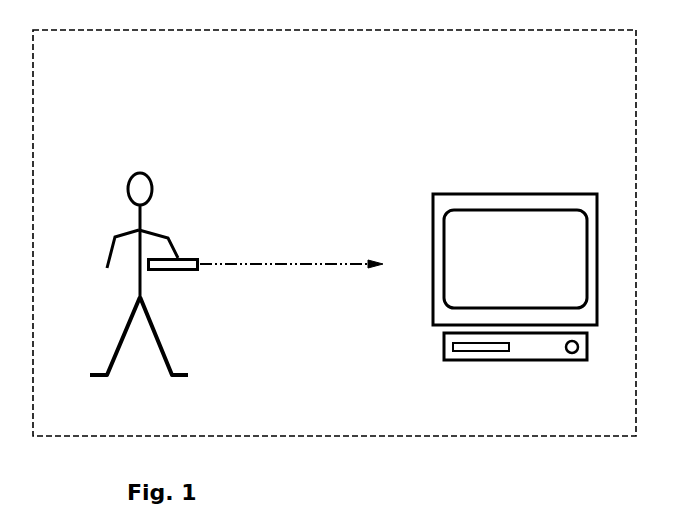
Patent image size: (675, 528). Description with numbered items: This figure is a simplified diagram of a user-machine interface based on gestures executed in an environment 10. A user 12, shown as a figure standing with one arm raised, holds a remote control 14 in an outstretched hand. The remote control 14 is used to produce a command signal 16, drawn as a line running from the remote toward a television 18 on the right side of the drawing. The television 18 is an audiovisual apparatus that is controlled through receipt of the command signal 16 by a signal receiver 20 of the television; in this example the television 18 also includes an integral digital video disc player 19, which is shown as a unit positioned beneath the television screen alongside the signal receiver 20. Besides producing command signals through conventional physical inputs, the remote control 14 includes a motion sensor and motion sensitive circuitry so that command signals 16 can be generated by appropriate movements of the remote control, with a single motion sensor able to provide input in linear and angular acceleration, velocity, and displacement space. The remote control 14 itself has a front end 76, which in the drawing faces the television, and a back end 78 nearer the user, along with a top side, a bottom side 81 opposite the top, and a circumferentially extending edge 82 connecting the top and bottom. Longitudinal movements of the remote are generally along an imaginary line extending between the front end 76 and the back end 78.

The environment 10 is at (152, 30).
The user 12 is at (133, 223).
The remote control 14 is at (177, 256).
The command signal 16 is at (223, 263).
The television 18 is at (515, 259).
The digital video disc (DVD) player 19 is at (482, 348).
The signal receiver 20 is at (572, 353).
The front end 76 is at (198, 270).
The back end 78 is at (145, 263).
The bottom side 81 is at (155, 272).
The circumferentially extending edge 82 is at (172, 262).